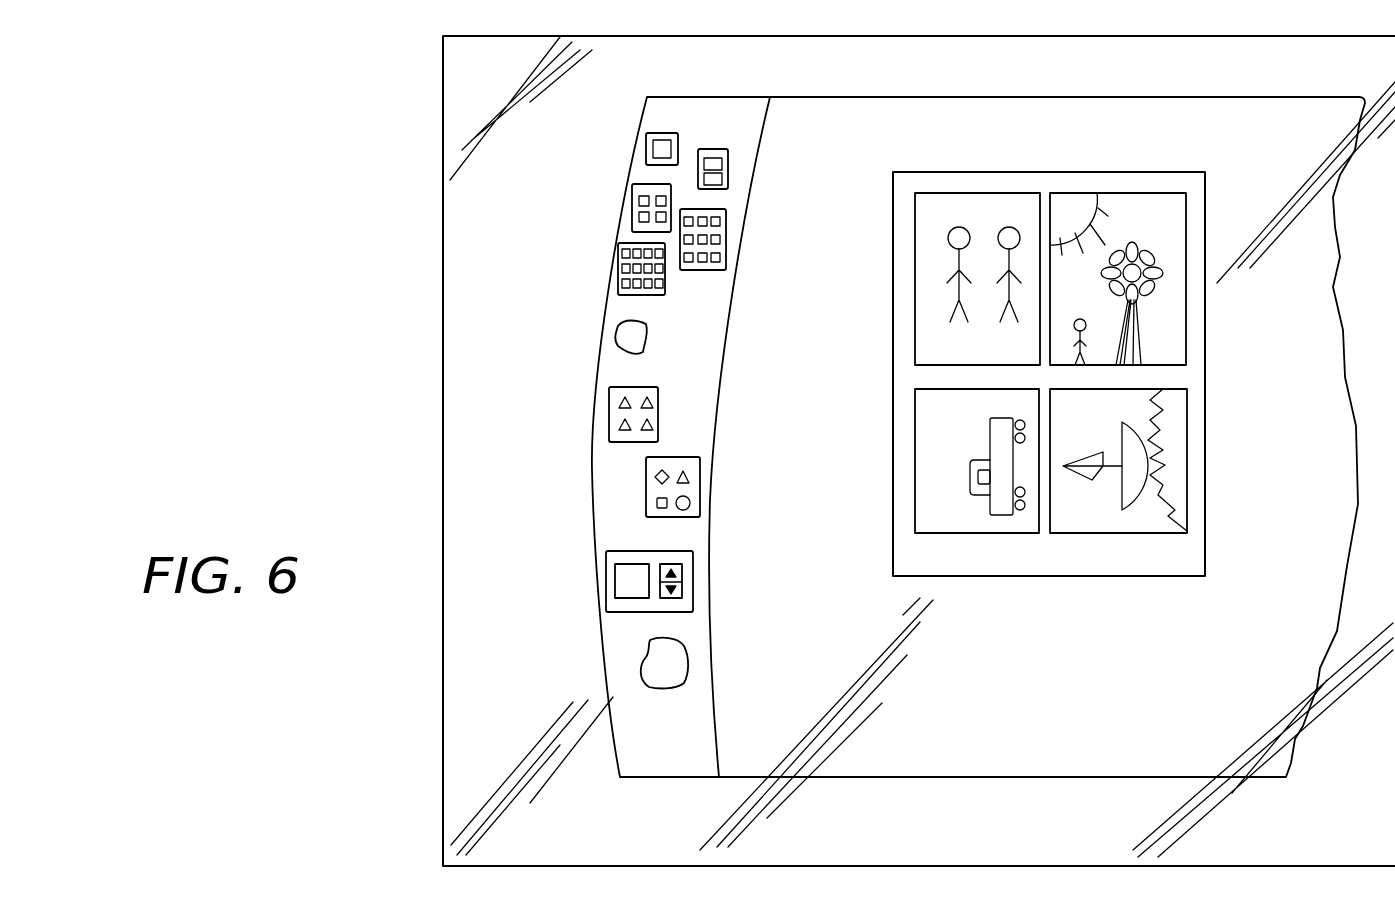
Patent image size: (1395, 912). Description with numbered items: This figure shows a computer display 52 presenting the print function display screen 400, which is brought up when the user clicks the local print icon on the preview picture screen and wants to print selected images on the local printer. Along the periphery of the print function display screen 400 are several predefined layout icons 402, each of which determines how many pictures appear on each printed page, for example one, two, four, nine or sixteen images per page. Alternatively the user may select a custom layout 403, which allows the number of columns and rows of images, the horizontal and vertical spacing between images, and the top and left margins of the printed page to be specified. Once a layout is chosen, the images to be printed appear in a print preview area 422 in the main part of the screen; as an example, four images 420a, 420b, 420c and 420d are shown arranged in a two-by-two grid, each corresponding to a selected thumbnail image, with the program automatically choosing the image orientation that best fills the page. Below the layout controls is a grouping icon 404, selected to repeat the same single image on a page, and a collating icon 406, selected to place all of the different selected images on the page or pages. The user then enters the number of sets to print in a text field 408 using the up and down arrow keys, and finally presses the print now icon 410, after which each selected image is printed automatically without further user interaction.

The housing 52 is at (798, 38).
The print function display screen 400 is at (977, 97).
The layout icons 402 is at (718, 149).
The custom layout 403 is at (614, 333).
The grouping icon 404 is at (609, 415).
The collating icon 406 is at (700, 490).
The text field 408 is at (693, 590).
The print now icon 410 is at (637, 670).
The print preview area 422 is at (997, 172).
The image 420a is at (915, 238).
The image 420b is at (1150, 193).
The image 420c is at (915, 432).
The image 420d is at (1140, 533).